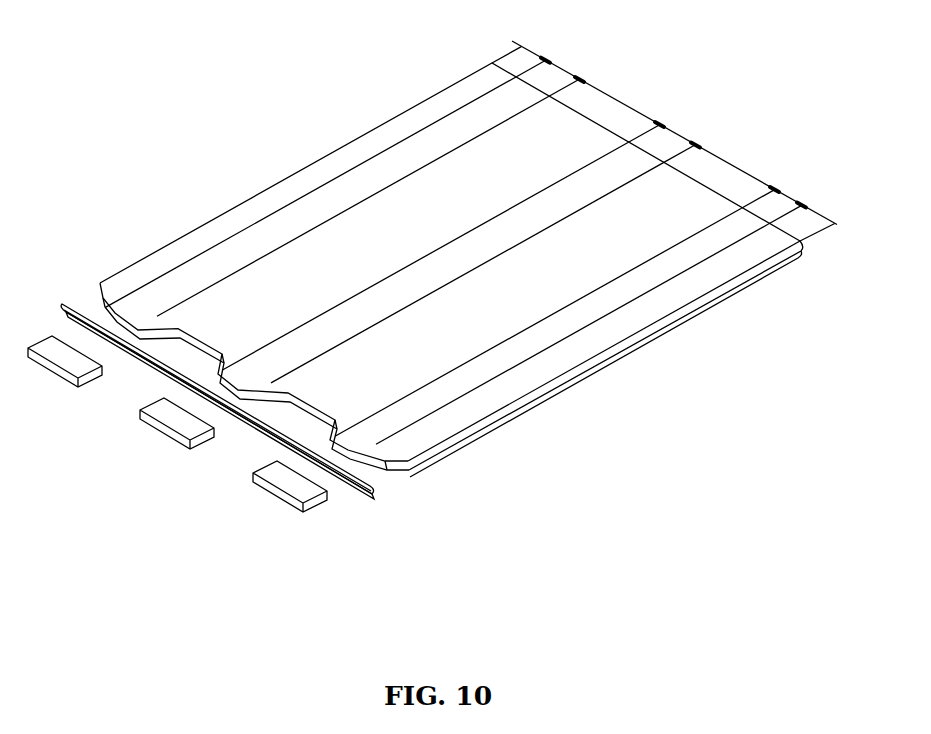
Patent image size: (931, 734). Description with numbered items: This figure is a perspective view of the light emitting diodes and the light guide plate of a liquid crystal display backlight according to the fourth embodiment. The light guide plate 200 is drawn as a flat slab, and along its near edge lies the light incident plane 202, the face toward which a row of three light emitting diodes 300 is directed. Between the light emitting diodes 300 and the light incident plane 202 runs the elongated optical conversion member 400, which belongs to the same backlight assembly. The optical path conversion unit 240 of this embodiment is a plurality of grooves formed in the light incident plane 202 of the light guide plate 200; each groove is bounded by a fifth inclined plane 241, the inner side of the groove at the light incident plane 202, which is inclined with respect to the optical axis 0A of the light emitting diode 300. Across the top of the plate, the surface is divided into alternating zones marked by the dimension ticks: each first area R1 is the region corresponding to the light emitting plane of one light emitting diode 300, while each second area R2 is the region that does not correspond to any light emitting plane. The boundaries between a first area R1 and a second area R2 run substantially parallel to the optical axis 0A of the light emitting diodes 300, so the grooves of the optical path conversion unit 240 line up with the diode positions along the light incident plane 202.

The light guide plate 200 is at (630, 345).
The light incident plane 202 is at (113, 300).
The optical path conversion unit 240 is at (153, 370).
The fifth inclined plane 241 is at (387, 462).
The light emitting diode 300 is at (272, 487).
The optical axis 0A is at (160, 428).
The optical conversion member 400 is at (257, 427).
The first area R1 is at (680, 139).
The second area R2 is at (667, 136).